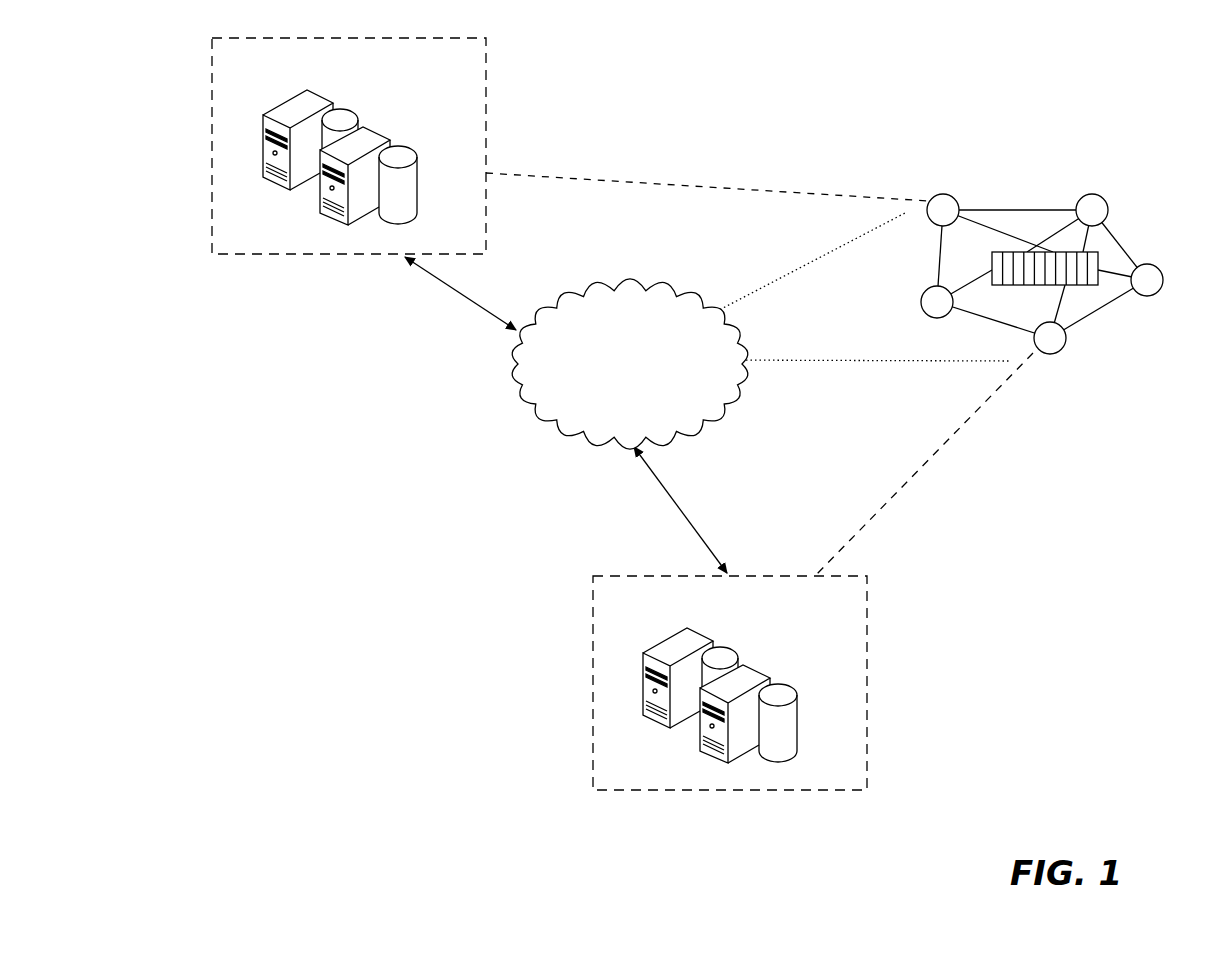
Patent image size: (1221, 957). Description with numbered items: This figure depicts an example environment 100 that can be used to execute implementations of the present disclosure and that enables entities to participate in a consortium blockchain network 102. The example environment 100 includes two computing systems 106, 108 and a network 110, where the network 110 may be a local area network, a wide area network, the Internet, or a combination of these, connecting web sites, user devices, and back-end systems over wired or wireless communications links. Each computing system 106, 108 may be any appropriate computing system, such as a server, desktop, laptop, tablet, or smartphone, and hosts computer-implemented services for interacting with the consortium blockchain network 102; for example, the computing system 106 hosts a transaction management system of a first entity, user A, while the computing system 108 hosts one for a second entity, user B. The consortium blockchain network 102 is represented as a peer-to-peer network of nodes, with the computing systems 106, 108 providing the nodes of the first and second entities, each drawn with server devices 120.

The example environment 100 is at (226, 568).
The consortium blockchain network 102 is at (1088, 163).
The computing system 106 is at (487, 147).
The computing system 108 is at (868, 687).
The network 110 is at (640, 281).
The server / computing devices 120 is at (362, 118).